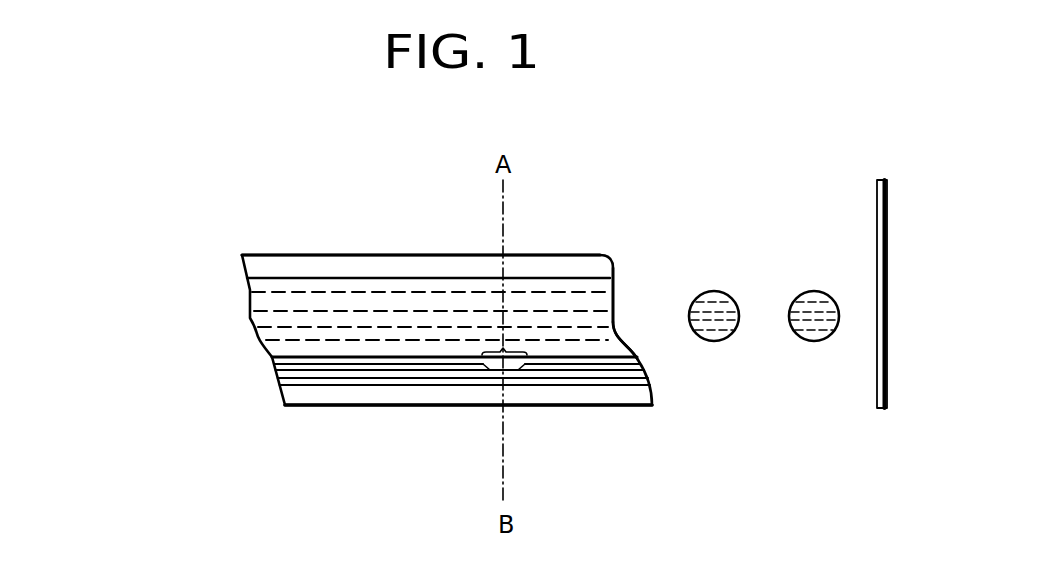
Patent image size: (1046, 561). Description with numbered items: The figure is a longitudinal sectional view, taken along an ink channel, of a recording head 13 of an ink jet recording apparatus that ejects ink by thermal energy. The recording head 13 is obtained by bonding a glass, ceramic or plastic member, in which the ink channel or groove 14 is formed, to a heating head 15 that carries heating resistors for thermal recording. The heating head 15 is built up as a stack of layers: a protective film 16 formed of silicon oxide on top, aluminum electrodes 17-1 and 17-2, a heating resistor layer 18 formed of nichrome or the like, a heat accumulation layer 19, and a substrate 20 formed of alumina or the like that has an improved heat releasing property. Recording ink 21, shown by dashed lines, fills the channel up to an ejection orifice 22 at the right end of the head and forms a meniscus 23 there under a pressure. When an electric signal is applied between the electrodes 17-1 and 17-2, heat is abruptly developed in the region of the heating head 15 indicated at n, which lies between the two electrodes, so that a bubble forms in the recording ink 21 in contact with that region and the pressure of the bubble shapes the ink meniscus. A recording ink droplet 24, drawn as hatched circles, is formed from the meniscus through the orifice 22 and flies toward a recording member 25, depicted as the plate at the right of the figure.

The recording head 13 is at (373, 255).
The groove 14 is at (453, 278).
The heating head 15 is at (355, 392).
The protective film 16 is at (313, 362).
The aluminum electrode 17-1 is at (381, 372).
The aluminum electrode 17-2 is at (578, 368).
The heating resistor layer 18 is at (433, 378).
The heat accumulation layer 19 is at (468, 382).
The substrate 20 is at (535, 397).
The recording ink 21 is at (280, 285).
The ejection orifice 22 is at (630, 335).
The meniscus 23 is at (617, 322).
The recording ink droplet 24 is at (847, 287).
The recording member 25 is at (877, 222).